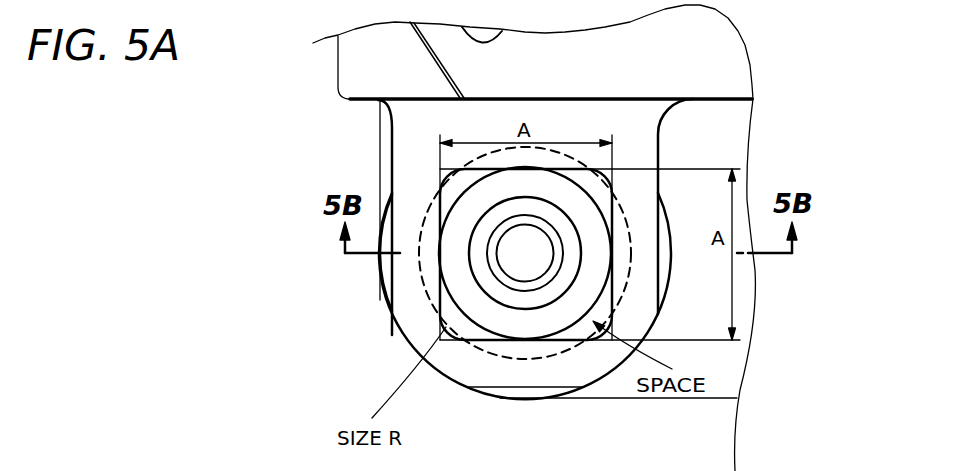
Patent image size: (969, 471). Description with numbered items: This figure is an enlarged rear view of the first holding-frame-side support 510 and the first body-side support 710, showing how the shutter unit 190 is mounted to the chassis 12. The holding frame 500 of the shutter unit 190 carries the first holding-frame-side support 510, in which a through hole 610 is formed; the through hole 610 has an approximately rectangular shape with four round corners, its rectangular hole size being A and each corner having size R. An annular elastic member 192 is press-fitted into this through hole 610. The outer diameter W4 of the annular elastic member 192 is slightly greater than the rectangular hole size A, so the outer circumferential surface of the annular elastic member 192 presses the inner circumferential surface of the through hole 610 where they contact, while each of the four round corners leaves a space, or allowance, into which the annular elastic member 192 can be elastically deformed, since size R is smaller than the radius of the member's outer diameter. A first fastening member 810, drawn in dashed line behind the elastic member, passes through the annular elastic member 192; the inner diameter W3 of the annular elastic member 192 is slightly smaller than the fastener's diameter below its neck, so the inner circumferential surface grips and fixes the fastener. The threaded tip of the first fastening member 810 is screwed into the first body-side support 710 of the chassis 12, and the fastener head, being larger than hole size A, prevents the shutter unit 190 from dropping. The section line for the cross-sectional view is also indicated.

The holding frame 500 is at (375, 52).
The first holding-frame-side support 510 is at (410, 162).
The chassis 12 is at (386, 178).
The first body-side support 710 is at (383, 273).
The through hole 610 is at (443, 322).
The shutter unit 190 is at (670, 42).
The annular elastic member 192 is at (545, 323).
The first fastening member 810 is at (498, 358).
The inner diameter of annular elastic member W3 is at (575, 223).
The outer diameter of annular elastic member W4 is at (583, 187).